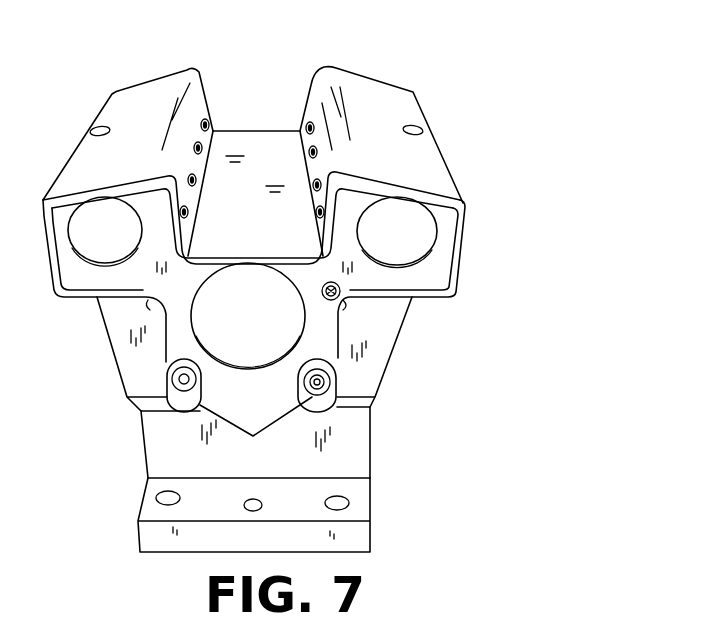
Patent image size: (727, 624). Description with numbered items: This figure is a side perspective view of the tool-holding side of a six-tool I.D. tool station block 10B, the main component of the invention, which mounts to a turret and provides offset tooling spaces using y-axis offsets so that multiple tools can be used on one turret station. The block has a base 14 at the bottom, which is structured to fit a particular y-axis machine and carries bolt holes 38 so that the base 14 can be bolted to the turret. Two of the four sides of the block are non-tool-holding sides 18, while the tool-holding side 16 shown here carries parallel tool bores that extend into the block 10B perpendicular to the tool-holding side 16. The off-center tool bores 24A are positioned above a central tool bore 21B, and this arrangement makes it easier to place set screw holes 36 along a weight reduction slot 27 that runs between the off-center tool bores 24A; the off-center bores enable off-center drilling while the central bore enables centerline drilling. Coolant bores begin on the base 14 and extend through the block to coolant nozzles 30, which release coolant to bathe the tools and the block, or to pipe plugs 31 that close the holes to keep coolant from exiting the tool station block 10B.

The I.D. tool station block 10B is at (297, 46).
The base 14 is at (202, 543).
The tool-holding side 16 is at (158, 448).
The non-tool-holding side 18 is at (128, 365).
The central aperture 21B is at (252, 290).
The off-center tool bore 24A is at (413, 247).
The weight reduction slot 27 is at (265, 145).
The coolant nozzle 30 is at (311, 410).
The pipe plug 31 is at (343, 293).
The set screw hole 36 is at (212, 122).
The bolt hole 38 is at (352, 501).